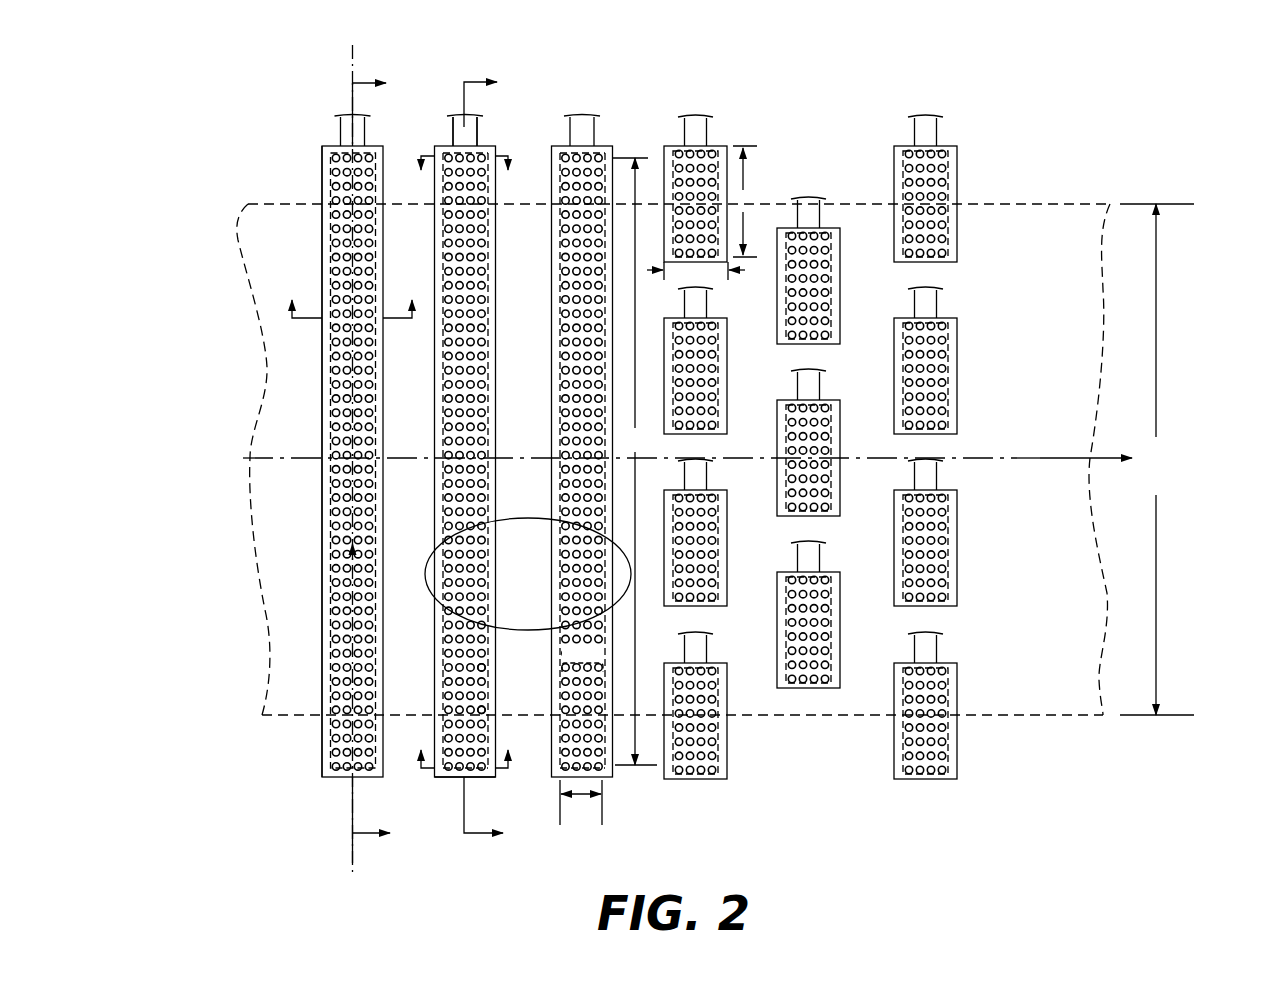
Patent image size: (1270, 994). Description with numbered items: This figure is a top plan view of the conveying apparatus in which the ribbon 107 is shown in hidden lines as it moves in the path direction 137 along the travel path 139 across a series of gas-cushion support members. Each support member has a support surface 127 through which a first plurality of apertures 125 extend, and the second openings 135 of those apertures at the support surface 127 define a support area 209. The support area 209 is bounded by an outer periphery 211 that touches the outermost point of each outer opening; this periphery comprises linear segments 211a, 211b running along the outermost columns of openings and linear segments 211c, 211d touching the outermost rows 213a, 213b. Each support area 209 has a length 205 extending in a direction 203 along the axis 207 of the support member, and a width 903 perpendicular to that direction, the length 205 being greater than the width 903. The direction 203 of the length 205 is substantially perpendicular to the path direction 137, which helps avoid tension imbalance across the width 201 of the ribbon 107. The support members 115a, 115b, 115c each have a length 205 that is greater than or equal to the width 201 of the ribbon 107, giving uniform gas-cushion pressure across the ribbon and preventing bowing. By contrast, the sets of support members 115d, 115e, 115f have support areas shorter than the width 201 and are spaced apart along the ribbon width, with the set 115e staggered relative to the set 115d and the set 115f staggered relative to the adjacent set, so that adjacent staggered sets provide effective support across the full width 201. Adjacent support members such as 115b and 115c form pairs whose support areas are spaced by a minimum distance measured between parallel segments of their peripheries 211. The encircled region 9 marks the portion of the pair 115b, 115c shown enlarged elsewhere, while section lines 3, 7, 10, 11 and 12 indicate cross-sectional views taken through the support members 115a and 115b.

The support member 115a is at (296, 460).
The first support member 115b is at (434, 471).
The second support member 115c is at (547, 800).
The set of support members 115d is at (698, 784).
The set of support members 115e is at (807, 698).
The set of support members 115f is at (923, 784).
The ribbon 107 is at (1000, 722).
The width of the ribbon 201 is at (1157, 459).
The direction of the length 203 is at (350, 597).
The length of the support area 205 is at (686, 455).
The axis of the support member 207 is at (350, 688).
The support area 209 is at (484, 238).
The outer periphery 211 is at (532, 445).
The linear segment 211a is at (443, 437).
The linear segment 211b is at (540, 312).
The linear segment 211c is at (566, 148).
The linear segment 211d is at (610, 782).
The outermost row 213a is at (430, 144).
The outermost row 213b is at (447, 781).
The width of the support area 903 is at (594, 826).
The first plurality of apertures 125 is at (486, 671).
The support surface 127 is at (582, 656).
The second openings 135 is at (486, 712).
The path direction 137 is at (1044, 458).
The travel path 139 is at (982, 458).
The enlarged view 9 is at (513, 518).
The section line 3- 3 is at (380, 459).
The section line 7- 7 is at (355, 294).
The section line 10- 10 is at (495, 459).
The section line 11- 11 is at (464, 177).
The section line 12- 12 is at (466, 744).